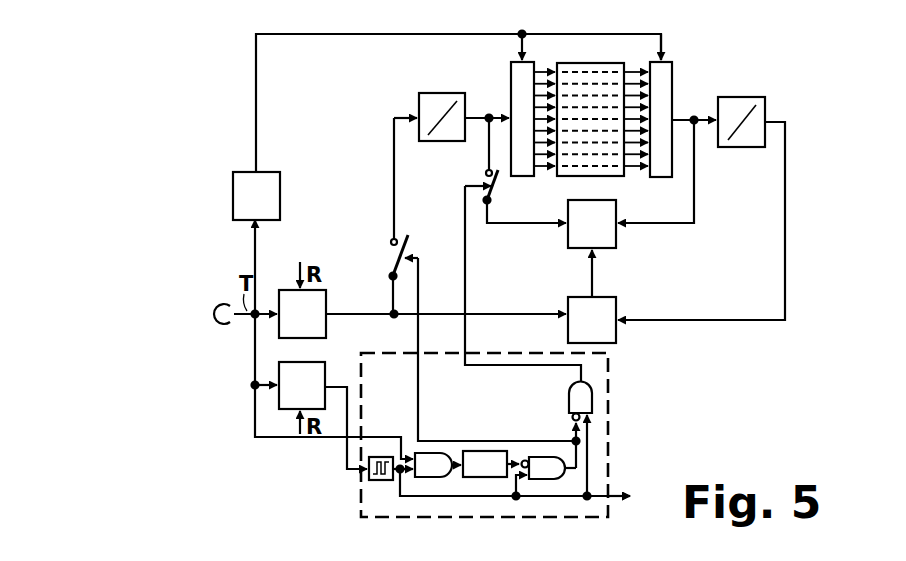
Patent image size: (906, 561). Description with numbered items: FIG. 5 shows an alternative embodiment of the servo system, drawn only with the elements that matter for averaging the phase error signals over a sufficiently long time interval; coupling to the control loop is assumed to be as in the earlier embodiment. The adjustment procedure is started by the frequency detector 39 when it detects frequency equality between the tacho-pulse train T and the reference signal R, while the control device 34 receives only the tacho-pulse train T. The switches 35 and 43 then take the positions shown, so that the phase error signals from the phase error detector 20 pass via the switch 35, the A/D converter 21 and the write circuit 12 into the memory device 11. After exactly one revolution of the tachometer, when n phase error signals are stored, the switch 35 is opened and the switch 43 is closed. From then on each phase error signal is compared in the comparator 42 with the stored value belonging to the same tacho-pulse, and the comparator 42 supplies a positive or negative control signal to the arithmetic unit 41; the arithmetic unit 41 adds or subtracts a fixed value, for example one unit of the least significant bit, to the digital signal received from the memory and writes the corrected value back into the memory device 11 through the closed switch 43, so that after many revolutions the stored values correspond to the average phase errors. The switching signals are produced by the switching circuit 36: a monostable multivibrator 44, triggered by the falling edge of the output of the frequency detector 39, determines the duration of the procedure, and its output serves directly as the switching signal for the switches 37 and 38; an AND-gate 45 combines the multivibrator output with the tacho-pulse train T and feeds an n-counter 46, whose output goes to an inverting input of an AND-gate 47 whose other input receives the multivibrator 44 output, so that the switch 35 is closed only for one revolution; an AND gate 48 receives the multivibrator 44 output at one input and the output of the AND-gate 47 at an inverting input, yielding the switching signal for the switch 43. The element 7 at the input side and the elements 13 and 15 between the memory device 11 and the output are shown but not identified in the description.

The sensor / pickup 7 is at (222, 304).
The memory device 11 is at (610, 62).
The write circuit 12 is at (512, 61).
The output register 13 is at (674, 68).
The digital-to-analog converter 15 is at (740, 96).
The phase error detector 20 is at (326, 296).
The A/D converter 21 is at (446, 92).
The control device 34 is at (281, 192).
The switch 35 is at (398, 260).
The switching circuit 36 is at (360, 478).
The switch 37 is at (626, 491).
The switch 38 is at (636, 510).
The frequency detector 39 is at (325, 368).
The arithmetic unit 41 is at (616, 216).
The comparator 42 is at (616, 314).
The switch 43 is at (497, 184).
The monostable multivibrator 44 is at (380, 481).
The AND-gate 45 is at (437, 452).
The n-counter 46 is at (497, 450).
The AND-gate 47 is at (556, 478).
The AND gate 48 is at (568, 402).